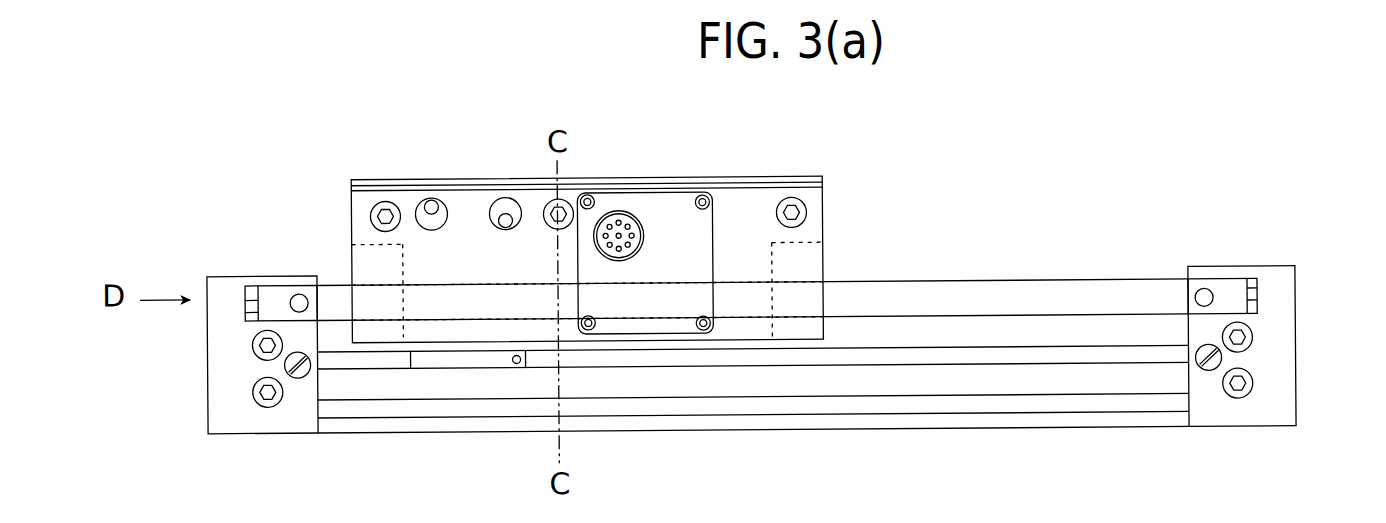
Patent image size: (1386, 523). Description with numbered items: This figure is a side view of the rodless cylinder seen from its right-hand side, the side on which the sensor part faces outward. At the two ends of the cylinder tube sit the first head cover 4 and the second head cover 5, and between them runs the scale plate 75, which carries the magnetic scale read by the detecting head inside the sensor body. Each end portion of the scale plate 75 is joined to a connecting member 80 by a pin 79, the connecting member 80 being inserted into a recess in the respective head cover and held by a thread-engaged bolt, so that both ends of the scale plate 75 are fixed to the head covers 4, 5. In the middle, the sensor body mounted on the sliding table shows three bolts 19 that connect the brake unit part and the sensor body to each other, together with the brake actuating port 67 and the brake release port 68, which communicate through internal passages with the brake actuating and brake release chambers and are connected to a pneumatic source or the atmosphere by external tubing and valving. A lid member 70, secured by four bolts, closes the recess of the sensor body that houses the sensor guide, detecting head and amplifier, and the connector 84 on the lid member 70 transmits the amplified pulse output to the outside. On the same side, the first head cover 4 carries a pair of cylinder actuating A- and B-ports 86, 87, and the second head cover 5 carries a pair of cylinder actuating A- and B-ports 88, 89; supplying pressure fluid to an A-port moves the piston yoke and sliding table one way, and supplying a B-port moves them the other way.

The first head cover 4 is at (1266, 419).
The second head cover 5 is at (231, 398).
The bolts 19 is at (382, 203).
The brake actuating port 67 is at (432, 200).
The brake release port 68 is at (503, 206).
The lid member 70 is at (678, 215).
The scale plate 75 is at (1040, 292).
The pin 79 is at (303, 296).
The connecting member 80 is at (275, 297).
The connector 84 is at (622, 228).
The cylinder actuating A-port 86 is at (1248, 336).
The cylinder actuating B-port 87 is at (1250, 384).
The cylinder actuating A-port 88 is at (253, 343).
The cylinder actuating B-port 89 is at (268, 406).